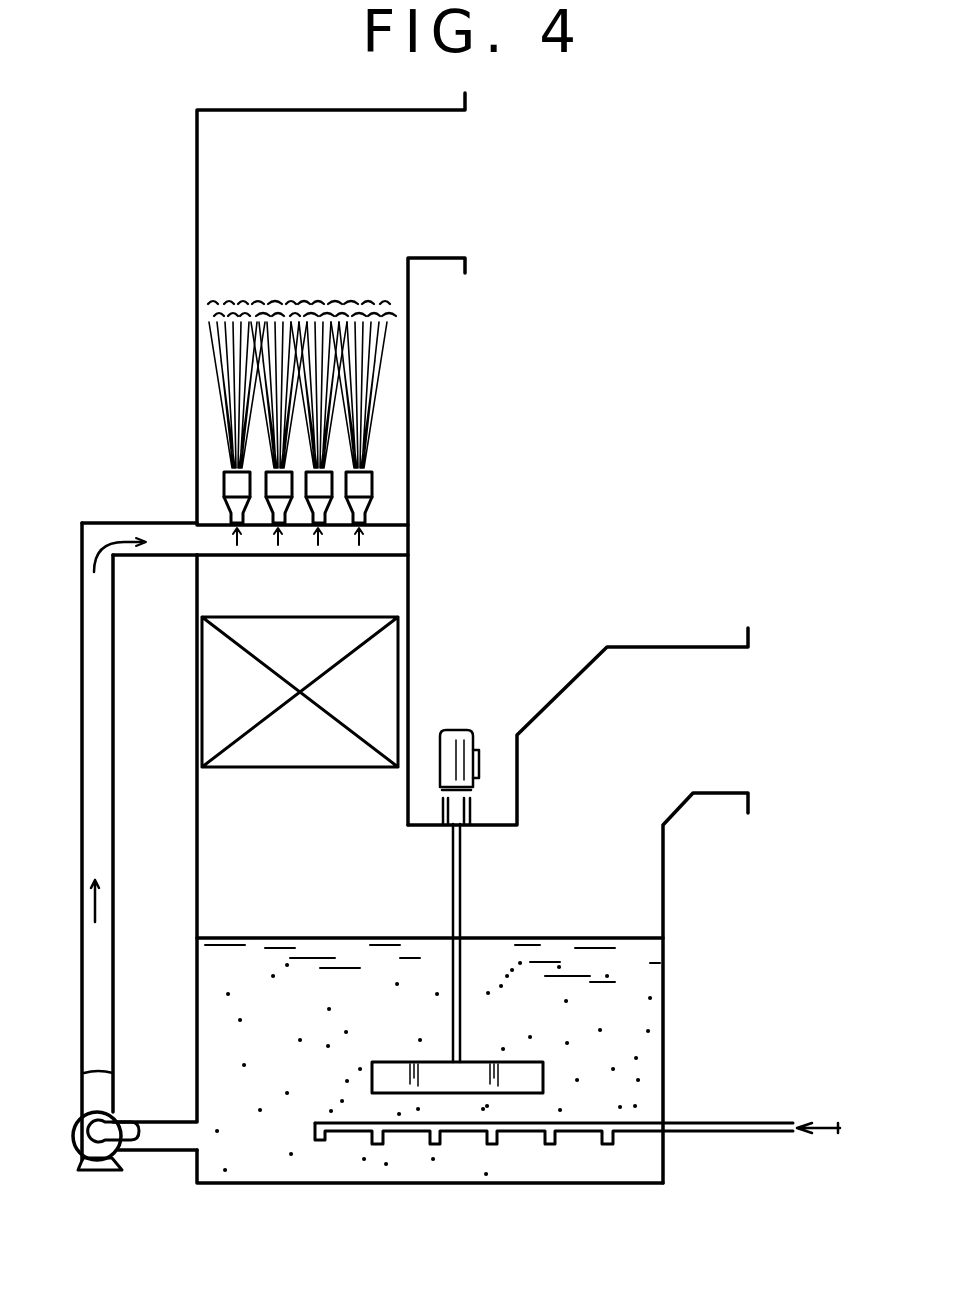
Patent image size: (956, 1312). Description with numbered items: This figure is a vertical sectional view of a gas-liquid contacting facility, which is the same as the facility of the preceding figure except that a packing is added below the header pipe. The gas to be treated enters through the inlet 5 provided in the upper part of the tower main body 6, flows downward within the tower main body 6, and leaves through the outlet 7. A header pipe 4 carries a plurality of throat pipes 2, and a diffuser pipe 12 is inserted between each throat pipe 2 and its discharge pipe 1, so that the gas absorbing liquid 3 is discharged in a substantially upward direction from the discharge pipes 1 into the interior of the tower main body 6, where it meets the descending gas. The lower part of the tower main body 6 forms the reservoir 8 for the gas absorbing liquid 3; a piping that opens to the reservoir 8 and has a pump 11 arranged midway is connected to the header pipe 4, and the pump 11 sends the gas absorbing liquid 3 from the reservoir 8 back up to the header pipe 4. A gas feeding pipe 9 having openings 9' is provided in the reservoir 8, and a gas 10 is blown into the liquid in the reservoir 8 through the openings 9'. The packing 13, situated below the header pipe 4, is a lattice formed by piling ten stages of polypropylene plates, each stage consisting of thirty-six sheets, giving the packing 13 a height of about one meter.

The discharge pipe 1 is at (372, 483).
The throat pipe 2 is at (375, 525).
The gas absorbing liquid 3 is at (528, 956).
The header pipe 4 is at (298, 547).
The inlet 5 is at (452, 188).
The tower main body 6 is at (409, 397).
The outlet 7 is at (724, 730).
The reservoir 8 is at (663, 1030).
The gas feeding pipe 9 is at (554, 1091).
The openings 9' is at (489, 1180).
The gas 10 is at (821, 1122).
The pump 11 is at (112, 1100).
The diffuser pipe 12 is at (372, 505).
The packing 13 is at (390, 676).